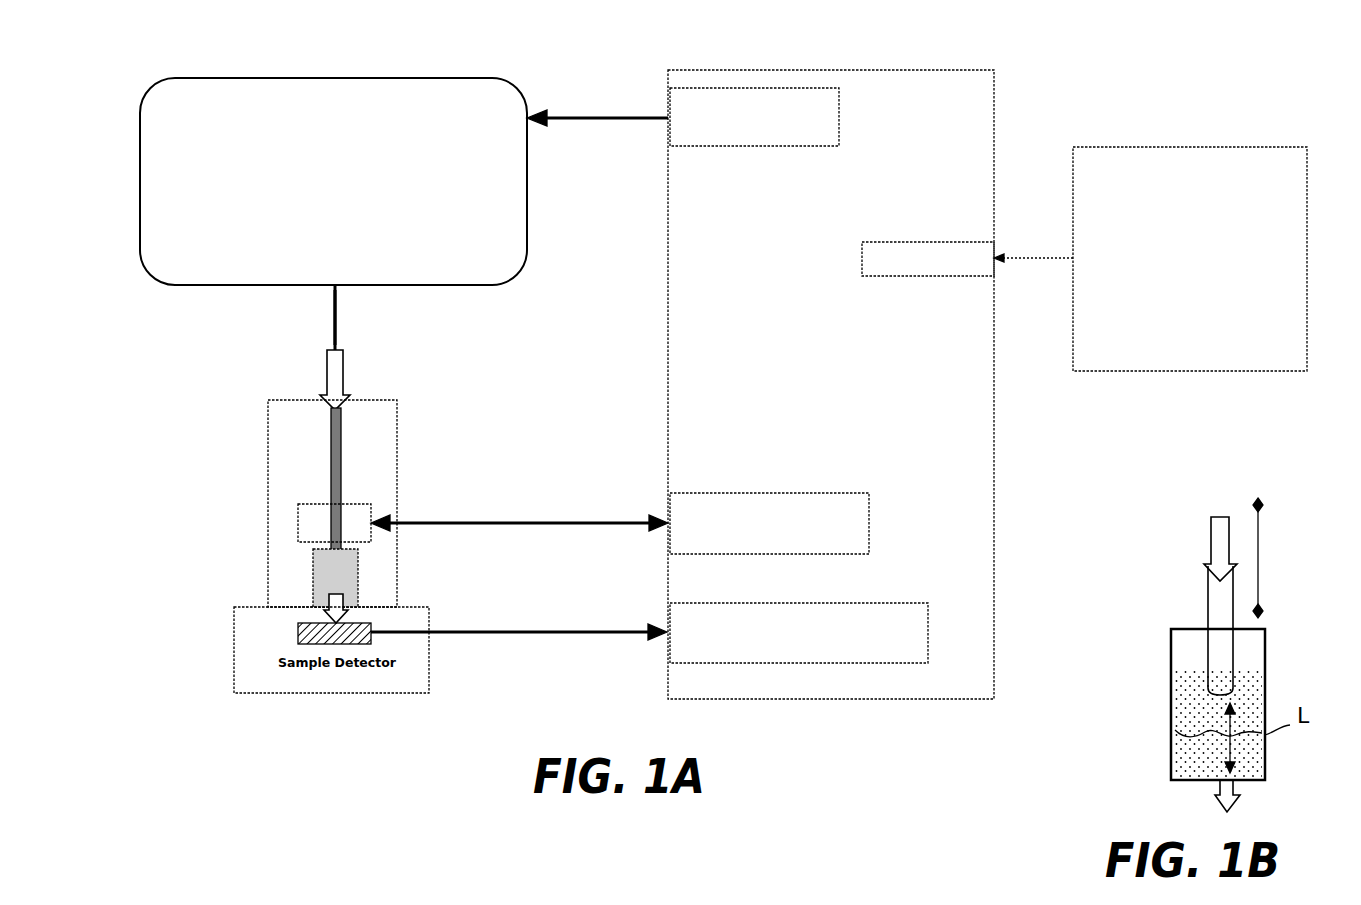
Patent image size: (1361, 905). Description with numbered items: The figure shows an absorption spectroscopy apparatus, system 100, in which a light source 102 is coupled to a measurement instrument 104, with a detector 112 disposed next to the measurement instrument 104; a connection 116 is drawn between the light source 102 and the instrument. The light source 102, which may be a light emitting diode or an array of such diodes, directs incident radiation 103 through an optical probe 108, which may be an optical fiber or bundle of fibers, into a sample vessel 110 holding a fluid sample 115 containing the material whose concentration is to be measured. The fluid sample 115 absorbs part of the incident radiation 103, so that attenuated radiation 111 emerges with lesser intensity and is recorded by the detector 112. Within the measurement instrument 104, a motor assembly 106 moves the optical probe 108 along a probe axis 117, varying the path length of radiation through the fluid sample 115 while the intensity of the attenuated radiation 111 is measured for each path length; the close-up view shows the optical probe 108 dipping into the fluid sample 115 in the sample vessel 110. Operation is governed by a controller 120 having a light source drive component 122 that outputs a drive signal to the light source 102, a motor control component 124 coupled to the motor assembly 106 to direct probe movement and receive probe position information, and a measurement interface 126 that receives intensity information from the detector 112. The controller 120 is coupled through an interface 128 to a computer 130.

In FIG. 1A, the system 100 is at (836, 778).
In FIG. 1A, the light source 102 is at (455, 283).
In FIG. 1A, the incident radiation 103 is at (333, 368).
In FIG. 1B, the incident radiation 103 is at (1221, 552).
In FIG. 1A, the measurement instrument 104 is at (268, 412).
In FIG. 1A, the motor assembly 106 is at (290, 525).
In FIG. 1A, the optical probe 108 is at (322, 455).
In FIG. 1B, the optical probe 108 is at (1208, 611).
In FIG. 1A, the sample vessel 110 is at (305, 573).
In FIG. 1B, the sample vessel 110 is at (1171, 650).
In FIG. 1A, the attenuated radiation 111 is at (340, 613).
In FIG. 1B, the attenuated radiation 111 is at (1220, 797).
In FIG. 1A, the detector 112 is at (298, 637).
In FIG. 1B, the fluid sample 115 is at (1175, 730).
In FIG. 1A, the connection / transfer line 116 is at (340, 347).
In FIG. 1B, the probe axis 117 is at (1258, 568).
In FIG. 1A, the controller 120 is at (800, 361).
In FIG. 1A, the light source drive component 122 is at (754, 117).
In FIG. 1A, the motor control component 124 is at (769, 523).
In FIG. 1A, the measurement interface 126 is at (757, 646).
In FIG. 1A, the interface 128 is at (910, 266).
In FIG. 1A, the computer 130 is at (1172, 259).